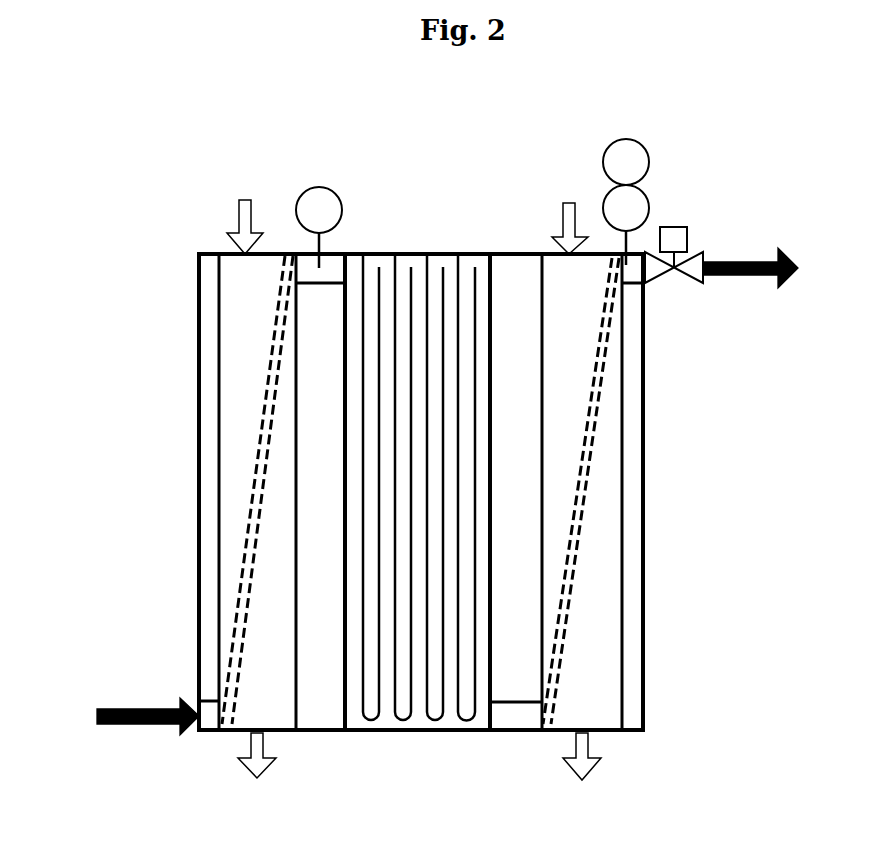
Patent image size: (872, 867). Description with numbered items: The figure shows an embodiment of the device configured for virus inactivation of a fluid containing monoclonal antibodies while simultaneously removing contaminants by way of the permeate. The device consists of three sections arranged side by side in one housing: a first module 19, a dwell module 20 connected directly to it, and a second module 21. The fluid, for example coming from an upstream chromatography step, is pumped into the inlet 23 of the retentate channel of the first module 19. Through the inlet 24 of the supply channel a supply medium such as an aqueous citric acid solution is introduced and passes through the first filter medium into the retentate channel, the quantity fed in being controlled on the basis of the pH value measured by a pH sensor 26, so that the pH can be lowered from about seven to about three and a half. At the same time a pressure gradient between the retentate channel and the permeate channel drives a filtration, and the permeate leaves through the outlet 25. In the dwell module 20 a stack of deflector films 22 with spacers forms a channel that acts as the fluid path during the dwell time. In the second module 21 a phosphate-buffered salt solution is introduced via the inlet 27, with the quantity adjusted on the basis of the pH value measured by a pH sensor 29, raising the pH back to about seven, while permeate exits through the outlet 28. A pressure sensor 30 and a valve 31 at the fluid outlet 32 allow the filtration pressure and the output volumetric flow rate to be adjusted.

The first module 19 is at (223, 253).
The dwell module 20 is at (388, 247).
The second module 21 is at (547, 253).
The deflector films 22 is at (443, 502).
The inlet of the retentate channel for the fluid 23 is at (148, 701).
The inlet for supply medium 24 is at (249, 208).
The outlet for the permeate 25 is at (259, 776).
The pH sensor 26 is at (319, 207).
The inlet for supply medium 27 is at (571, 204).
The outlet for the permeate 28 is at (585, 776).
The pH sensor 29 is at (649, 225).
The pressure sensor 30 is at (649, 162).
The valve 31 is at (674, 273).
The outlet for the fluid 32 is at (776, 269).